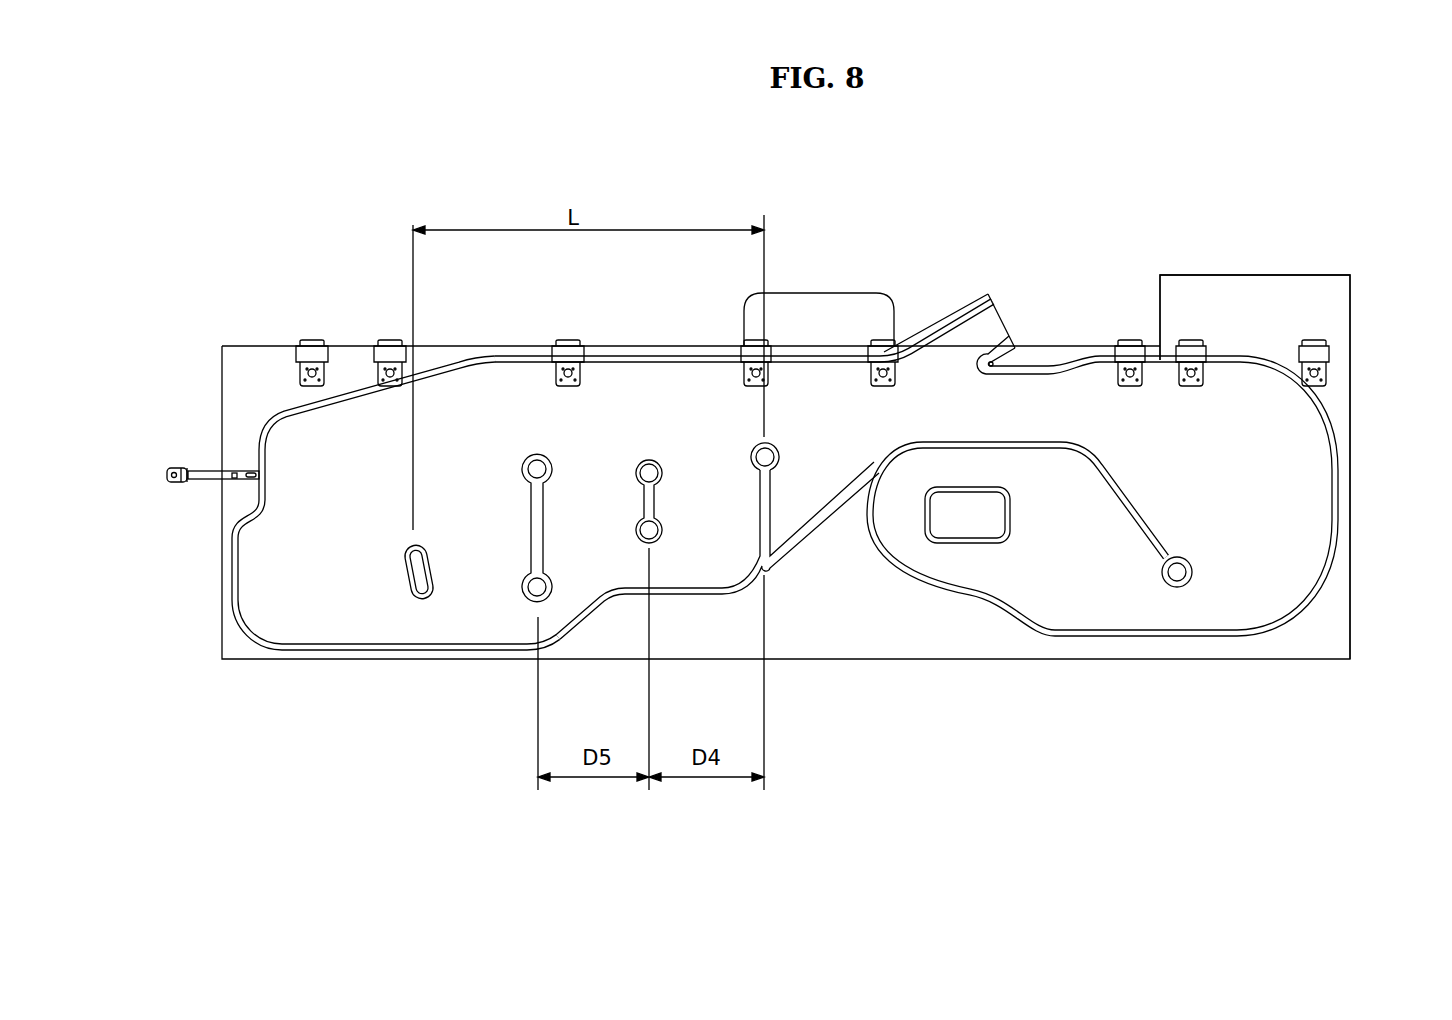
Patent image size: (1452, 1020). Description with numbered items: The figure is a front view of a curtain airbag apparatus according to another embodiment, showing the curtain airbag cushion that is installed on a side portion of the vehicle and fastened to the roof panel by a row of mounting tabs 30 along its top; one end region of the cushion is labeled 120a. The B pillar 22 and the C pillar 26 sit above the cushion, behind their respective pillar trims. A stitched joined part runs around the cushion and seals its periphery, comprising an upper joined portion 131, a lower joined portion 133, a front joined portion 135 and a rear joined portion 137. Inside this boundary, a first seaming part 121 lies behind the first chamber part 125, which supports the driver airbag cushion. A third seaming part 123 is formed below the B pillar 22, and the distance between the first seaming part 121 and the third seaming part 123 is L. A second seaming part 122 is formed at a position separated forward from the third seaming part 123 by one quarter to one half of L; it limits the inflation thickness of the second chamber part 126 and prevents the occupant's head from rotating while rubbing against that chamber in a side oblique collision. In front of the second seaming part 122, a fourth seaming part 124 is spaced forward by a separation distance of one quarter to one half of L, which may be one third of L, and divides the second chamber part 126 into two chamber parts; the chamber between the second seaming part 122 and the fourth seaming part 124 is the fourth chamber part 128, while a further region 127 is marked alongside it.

The B pillar 22 is at (819, 302).
The C pillar 26 is at (1275, 297).
The mounting tabs 30 is at (570, 362).
The pipe end portion 120a is at (993, 328).
The first seaming part 121 is at (420, 583).
The second seaming part 122 is at (649, 503).
The third seaming part 123 is at (768, 508).
The fourth seaming part 124 is at (533, 518).
The first chamber part 125 is at (303, 602).
The second chamber part 126 is at (510, 580).
The second pipe section 127 is at (710, 488).
The fourth chamber part 128 is at (572, 573).
The upper joined portion 131 is at (362, 395).
The lower joined portion 133 is at (453, 648).
The front joined portion 135 is at (232, 588).
The rear joined portion 137 is at (1336, 485).